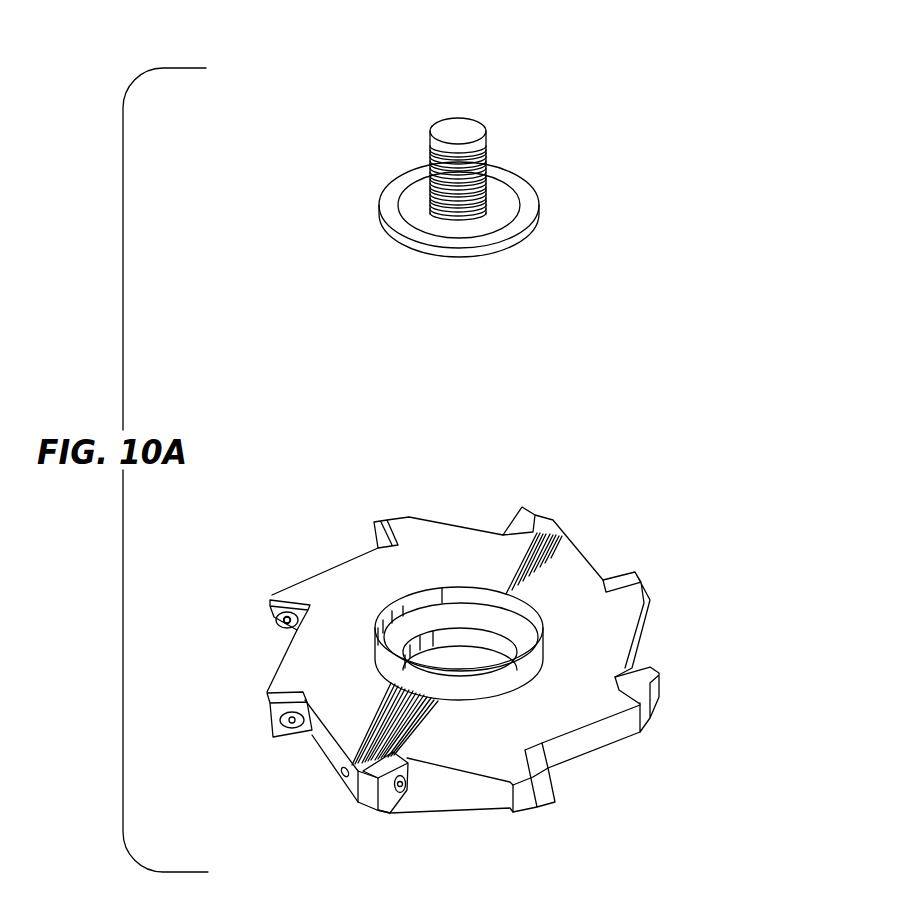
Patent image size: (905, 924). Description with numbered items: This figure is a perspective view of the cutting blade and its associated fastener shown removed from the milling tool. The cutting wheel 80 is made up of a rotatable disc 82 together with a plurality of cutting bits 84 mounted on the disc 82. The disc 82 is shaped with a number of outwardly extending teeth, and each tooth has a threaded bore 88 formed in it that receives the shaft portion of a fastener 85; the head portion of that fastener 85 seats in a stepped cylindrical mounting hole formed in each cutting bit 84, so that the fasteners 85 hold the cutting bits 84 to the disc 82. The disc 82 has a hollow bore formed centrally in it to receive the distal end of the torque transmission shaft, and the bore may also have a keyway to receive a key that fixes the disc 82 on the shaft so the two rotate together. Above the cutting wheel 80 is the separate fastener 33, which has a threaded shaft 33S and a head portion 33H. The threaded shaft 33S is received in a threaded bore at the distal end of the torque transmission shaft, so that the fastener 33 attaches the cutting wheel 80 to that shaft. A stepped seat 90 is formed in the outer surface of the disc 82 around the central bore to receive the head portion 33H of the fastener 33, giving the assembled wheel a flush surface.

The fastener 33 is at (383, 108).
The threaded shaft 33S is at (488, 150).
The head portion 33H is at (400, 245).
The cutting wheel 80 is at (602, 460).
The rotatable disc 82 is at (438, 547).
The cutting bits 84 is at (268, 612).
The fastener 85 is at (268, 620).
The threaded bore 88 is at (340, 773).
The stepped seat 90 is at (513, 630).